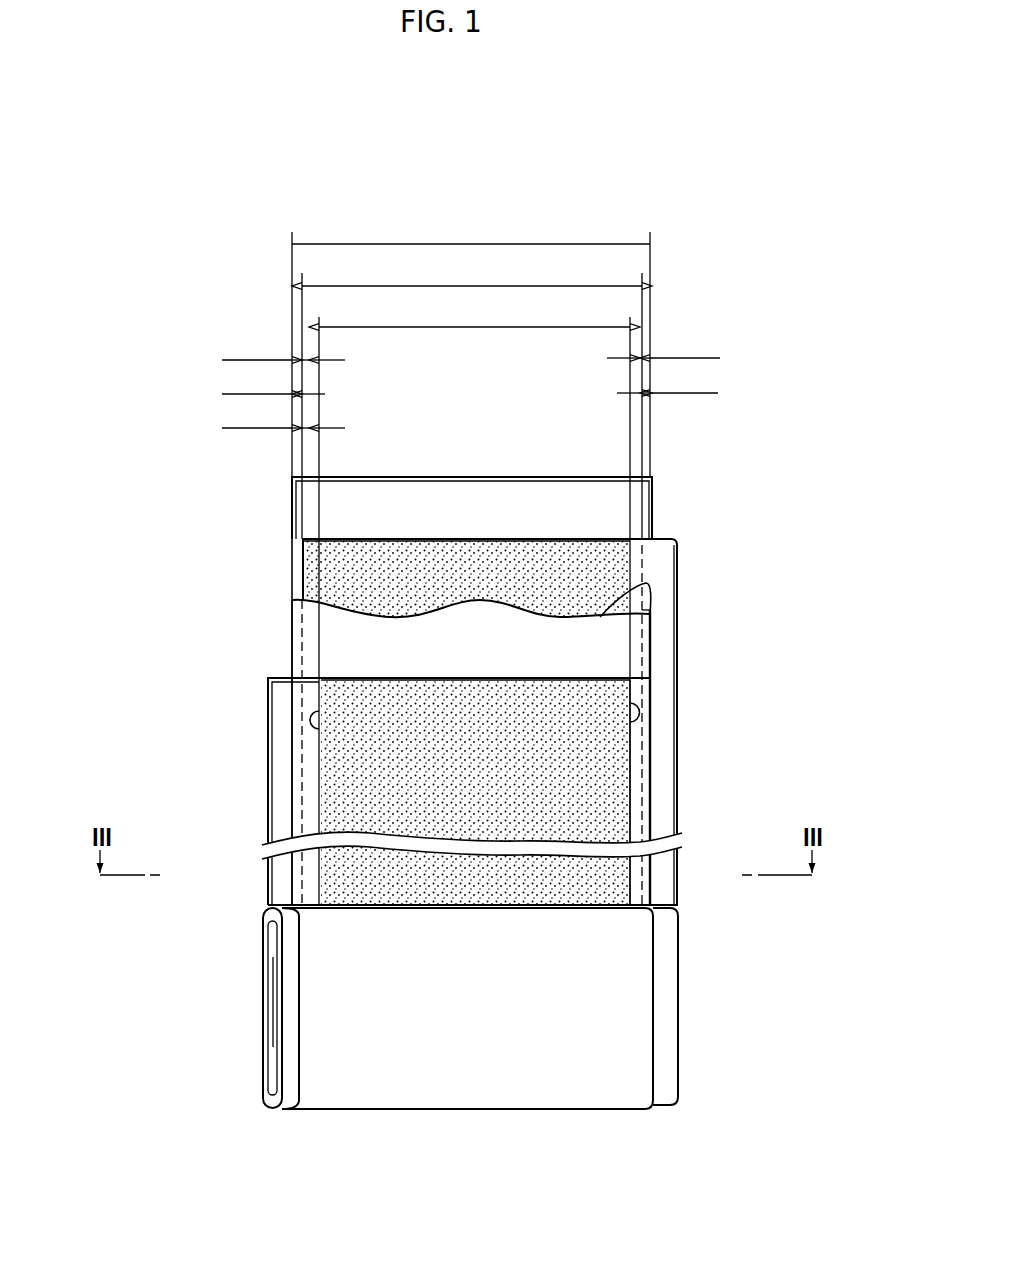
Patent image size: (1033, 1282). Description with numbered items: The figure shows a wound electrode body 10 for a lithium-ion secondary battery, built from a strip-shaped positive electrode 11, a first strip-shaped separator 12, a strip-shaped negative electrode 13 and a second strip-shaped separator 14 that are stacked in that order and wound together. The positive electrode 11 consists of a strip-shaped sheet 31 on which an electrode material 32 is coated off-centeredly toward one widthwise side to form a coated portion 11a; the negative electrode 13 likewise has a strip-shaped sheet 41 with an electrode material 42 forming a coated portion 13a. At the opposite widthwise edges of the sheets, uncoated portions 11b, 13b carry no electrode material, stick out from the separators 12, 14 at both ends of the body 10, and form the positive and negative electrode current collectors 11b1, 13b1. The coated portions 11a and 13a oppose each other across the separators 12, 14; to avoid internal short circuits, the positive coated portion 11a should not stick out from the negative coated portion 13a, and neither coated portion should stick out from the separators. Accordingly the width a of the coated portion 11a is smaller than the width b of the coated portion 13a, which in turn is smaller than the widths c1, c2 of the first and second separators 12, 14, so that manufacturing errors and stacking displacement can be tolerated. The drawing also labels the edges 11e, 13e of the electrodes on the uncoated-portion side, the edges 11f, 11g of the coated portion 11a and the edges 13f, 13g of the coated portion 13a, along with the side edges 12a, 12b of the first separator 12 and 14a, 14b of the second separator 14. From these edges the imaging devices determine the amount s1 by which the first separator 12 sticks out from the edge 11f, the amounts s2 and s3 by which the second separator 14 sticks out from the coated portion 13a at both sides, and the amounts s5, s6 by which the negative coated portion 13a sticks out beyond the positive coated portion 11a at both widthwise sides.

The wound electrode body 10 is at (470, 1044).
The strip-shaped positive electrode 11 is at (455, 761).
The coated portion of the strip-shaped positive electrode 11a is at (370, 786).
The uncoated portion of the strip-shaped positive electrode 11b is at (285, 815).
The positive electrode current collector 11b1 is at (282, 1005).
The edge of the strip-shaped positive electrode 11e is at (268, 833).
The edge of the coated portion of the strip-shaped positive electrode 11f is at (632, 712).
The edge of the coated portion of the strip-shaped positive electrode 11g is at (316, 718).
The first strip-shaped separator 12 is at (312, 645).
The second sheet side edge 12a is at (292, 660).
The second sheet side edge 12b is at (651, 672).
The strip-shaped negative electrode 13 is at (512, 674).
The coated portion of the strip-shaped negative electrode 13a is at (595, 556).
The uncoated portion of the strip-shaped negative electrode 13b is at (660, 607).
The negative electrode current collector 13b1 is at (665, 1018).
The edge of the strip-shaped negative electrode 13e is at (677, 708).
The edge of the coated portion of the strip-shaped negative electrode 13f is at (302, 542).
The edge of the coated portion of the strip-shaped negative electrode 13g is at (620, 602).
The second strip-shaped separator 14 is at (312, 508).
The fourth sheet side edge 14a is at (292, 521).
The fourth sheet side edge 14b is at (654, 522).
The strip-shaped sheet 31 is at (442, 678).
The electrode material 32 is at (625, 748).
The strip-shaped sheet 41 is at (452, 535).
The electrode material 42 is at (335, 580).
The width of the coated portion of the strip-shaped positive electrode a is at (474, 315).
The width of the coated portion of the strip-shaped negative electrode b is at (472, 274).
The width of the first strip-shaped separator c1 is at (650, 244).
The width of the second strip-shaped separator c2 is at (471, 231).
The amount of the first strip-shaped separator sticking out s1 is at (283, 416).
The amount of the second strip-shaped separator sticking out s2 is at (667, 381).
The amount of the second strip-shaped separator sticking out s3 is at (273, 382).
The amount of the negative coated portion sticking out s5 is at (663, 346).
The amount of the negative coated portion sticking out s6 is at (283, 348).